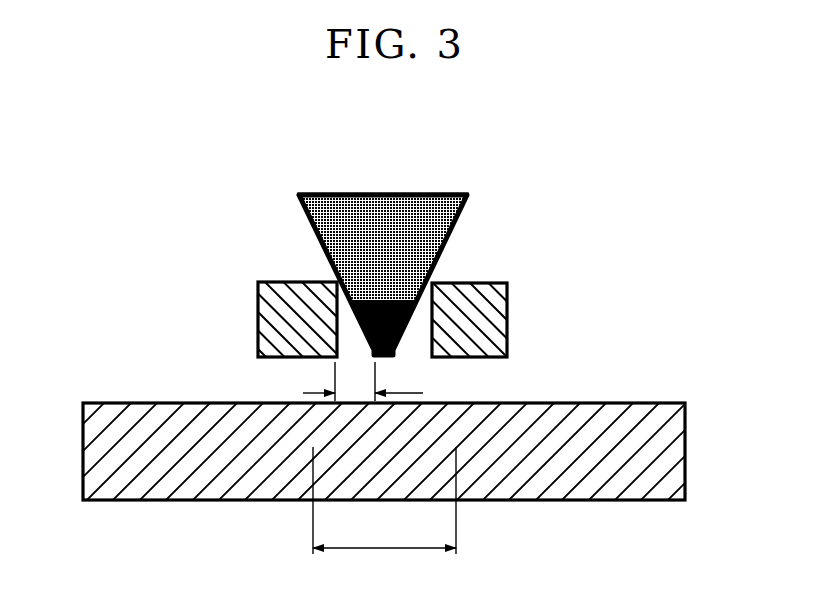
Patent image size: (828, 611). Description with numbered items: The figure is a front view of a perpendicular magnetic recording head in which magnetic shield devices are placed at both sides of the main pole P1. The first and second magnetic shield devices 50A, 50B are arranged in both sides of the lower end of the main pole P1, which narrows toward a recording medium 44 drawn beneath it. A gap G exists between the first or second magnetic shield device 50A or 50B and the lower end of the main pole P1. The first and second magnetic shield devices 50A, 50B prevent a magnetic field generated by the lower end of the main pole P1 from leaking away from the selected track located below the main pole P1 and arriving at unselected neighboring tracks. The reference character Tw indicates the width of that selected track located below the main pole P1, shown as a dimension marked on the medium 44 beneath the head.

The substrate 44 is at (205, 499).
The first magnetic shield device 50A is at (258, 302).
The second magnetic shield device 50B is at (507, 310).
The main pole P1 is at (313, 222).
The gap G is at (363, 381).
The width of the selected track Tw is at (384, 500).